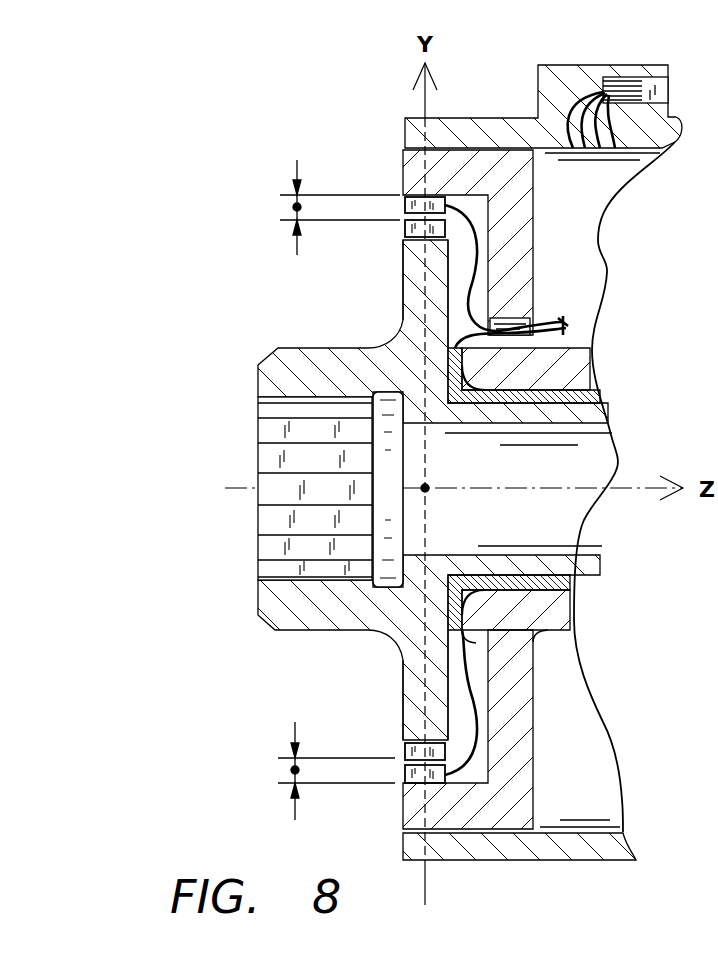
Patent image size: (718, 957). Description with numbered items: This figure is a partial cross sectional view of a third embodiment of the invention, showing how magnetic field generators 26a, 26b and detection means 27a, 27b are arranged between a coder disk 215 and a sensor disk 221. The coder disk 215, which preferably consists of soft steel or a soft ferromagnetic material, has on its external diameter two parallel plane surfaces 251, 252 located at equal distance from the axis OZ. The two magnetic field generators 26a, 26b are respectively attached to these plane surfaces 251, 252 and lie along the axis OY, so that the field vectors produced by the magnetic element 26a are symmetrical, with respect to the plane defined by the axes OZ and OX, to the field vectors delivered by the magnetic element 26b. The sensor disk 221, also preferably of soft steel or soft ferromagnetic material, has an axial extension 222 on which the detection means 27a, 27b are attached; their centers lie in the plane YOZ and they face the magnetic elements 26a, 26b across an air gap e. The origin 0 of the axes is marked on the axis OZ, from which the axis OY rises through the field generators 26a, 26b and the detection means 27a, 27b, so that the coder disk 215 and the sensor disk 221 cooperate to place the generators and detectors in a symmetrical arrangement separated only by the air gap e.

The axial extension 222 is at (403, 161).
The sensor disk 221 is at (535, 232).
The coder disk 215 is at (268, 352).
The parallel plane surface 251 is at (405, 258).
The parallel plane surface 252 is at (403, 740).
The detection means 27a is at (405, 197).
The magnetic field generator 26a is at (405, 230).
The magnetic field generator 26b is at (405, 752).
The detection means 27b is at (405, 783).
The air gap e is at (297, 207).
The origin 0 is at (427, 491).